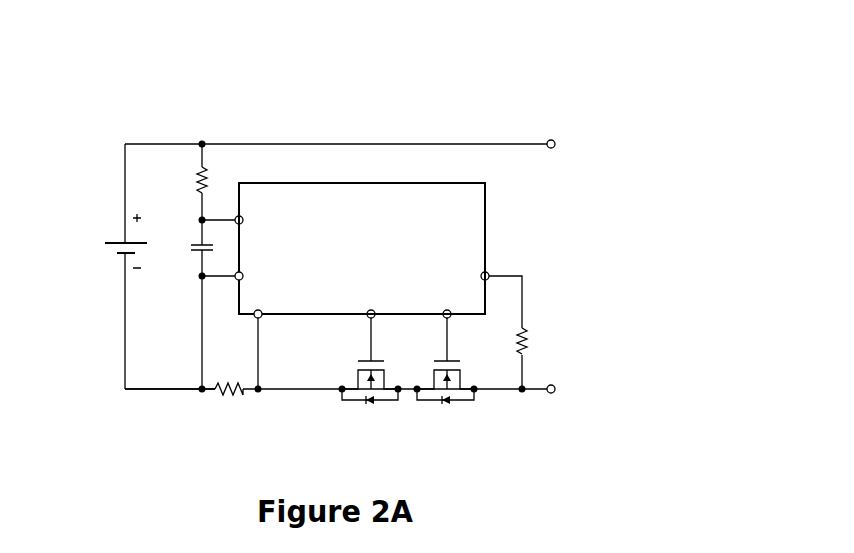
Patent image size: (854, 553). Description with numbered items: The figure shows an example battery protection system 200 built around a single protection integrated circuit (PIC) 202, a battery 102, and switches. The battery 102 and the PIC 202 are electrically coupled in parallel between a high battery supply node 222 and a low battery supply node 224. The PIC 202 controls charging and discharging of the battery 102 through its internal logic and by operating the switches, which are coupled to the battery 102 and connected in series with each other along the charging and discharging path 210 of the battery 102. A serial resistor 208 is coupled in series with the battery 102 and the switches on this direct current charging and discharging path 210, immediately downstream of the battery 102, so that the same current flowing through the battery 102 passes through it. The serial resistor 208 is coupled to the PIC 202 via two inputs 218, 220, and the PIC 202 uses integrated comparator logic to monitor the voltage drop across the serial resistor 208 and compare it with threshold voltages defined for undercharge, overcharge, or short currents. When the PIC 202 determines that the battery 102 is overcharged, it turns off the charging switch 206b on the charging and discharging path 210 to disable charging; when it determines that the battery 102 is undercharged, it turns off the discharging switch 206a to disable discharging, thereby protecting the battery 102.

The battery protection system 200 is at (359, 243).
The battery 102 is at (103, 243).
The protection integrated circuit (PIC) 202 is at (362, 248).
The discharging switch 206a is at (390, 407).
The charging switch 206b is at (456, 407).
The serial resistor 208 is at (242, 401).
The charging and discharging path 210 is at (125, 390).
The input 218 is at (237, 281).
The input 220 is at (261, 318).
The high battery supply node 222 is at (554, 148).
The low battery supply node 224 is at (554, 393).